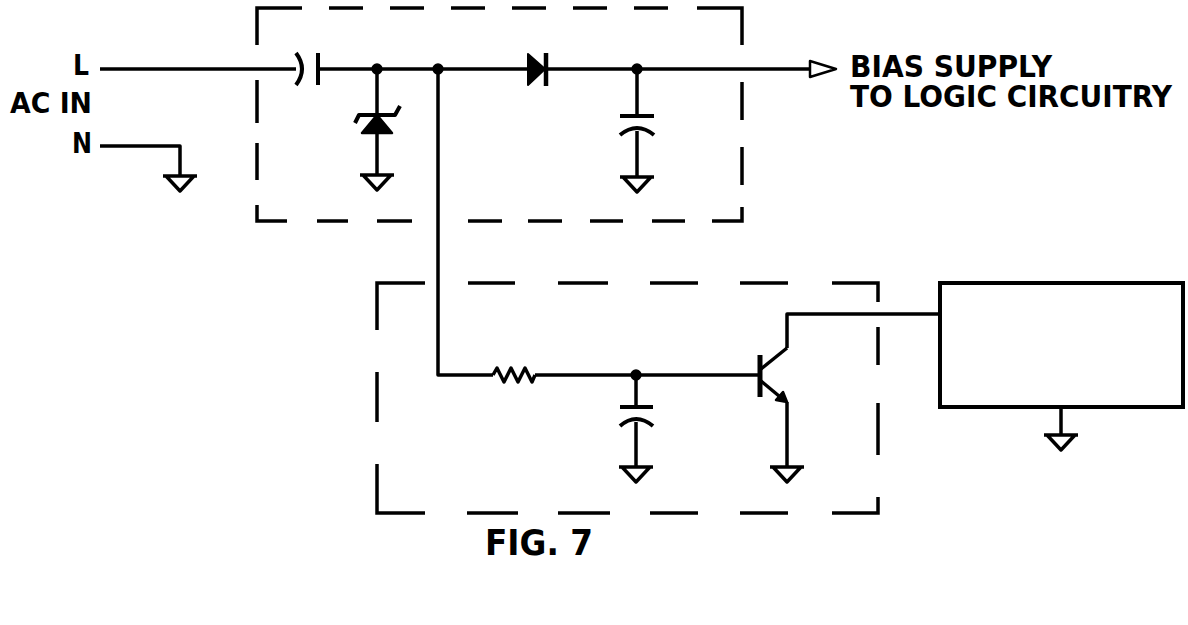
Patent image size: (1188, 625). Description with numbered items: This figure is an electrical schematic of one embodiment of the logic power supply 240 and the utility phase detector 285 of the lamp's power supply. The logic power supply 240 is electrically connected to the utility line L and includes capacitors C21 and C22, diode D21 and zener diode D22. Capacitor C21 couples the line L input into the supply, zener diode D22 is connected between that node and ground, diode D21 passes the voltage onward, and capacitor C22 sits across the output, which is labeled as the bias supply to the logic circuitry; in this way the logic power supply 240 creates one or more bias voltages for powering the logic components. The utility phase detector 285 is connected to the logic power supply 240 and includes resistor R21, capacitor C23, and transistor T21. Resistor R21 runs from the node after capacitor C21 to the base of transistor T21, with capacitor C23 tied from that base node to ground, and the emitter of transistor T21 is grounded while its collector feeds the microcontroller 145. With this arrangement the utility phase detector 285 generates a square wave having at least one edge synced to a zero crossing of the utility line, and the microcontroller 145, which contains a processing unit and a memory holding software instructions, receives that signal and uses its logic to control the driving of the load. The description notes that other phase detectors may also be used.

The capacitor C21 is at (311, 50).
The zener diode D22 is at (345, 129).
The diode D21 is at (541, 51).
The capacitor C22 is at (608, 130).
The resistor R21 is at (523, 357).
The capacitor C23 is at (608, 428).
The transistor T21 is at (806, 415).
The logic power supply 240 is at (262, 225).
The utility phase detector 285 is at (377, 390).
The microcontroller 145 is at (1167, 397).